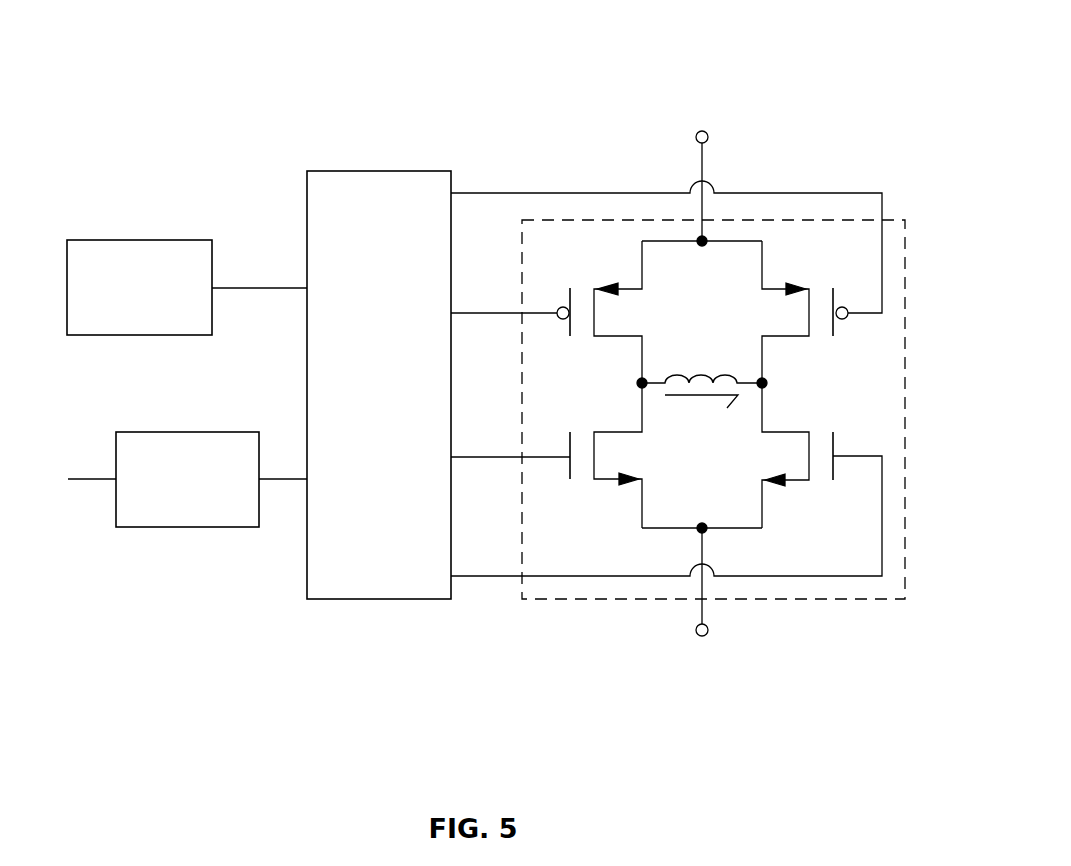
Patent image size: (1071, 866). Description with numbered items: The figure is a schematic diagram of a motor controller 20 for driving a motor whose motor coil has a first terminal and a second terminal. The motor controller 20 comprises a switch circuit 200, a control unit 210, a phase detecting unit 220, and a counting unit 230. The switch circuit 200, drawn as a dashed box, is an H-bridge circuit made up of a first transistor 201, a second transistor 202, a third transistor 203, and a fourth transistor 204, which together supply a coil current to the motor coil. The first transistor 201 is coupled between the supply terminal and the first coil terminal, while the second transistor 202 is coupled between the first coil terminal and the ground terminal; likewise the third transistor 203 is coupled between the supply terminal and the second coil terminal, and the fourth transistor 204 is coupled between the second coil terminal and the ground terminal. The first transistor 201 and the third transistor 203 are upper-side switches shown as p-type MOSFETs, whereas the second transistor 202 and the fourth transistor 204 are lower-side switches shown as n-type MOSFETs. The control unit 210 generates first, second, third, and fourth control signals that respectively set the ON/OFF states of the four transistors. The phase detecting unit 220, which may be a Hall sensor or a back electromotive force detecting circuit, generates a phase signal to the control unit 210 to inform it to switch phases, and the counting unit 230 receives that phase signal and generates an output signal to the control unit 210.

The motor controller 20 is at (785, 48).
The switch circuit 200 is at (562, 600).
The first transistor 201 is at (630, 288).
The second transistor 202 is at (610, 481).
The third transistor 203 is at (772, 288).
The fourth transistor 204 is at (794, 482).
The control unit 210 is at (378, 171).
The phase detecting unit 220 is at (141, 240).
The counting unit 230 is at (188, 432).